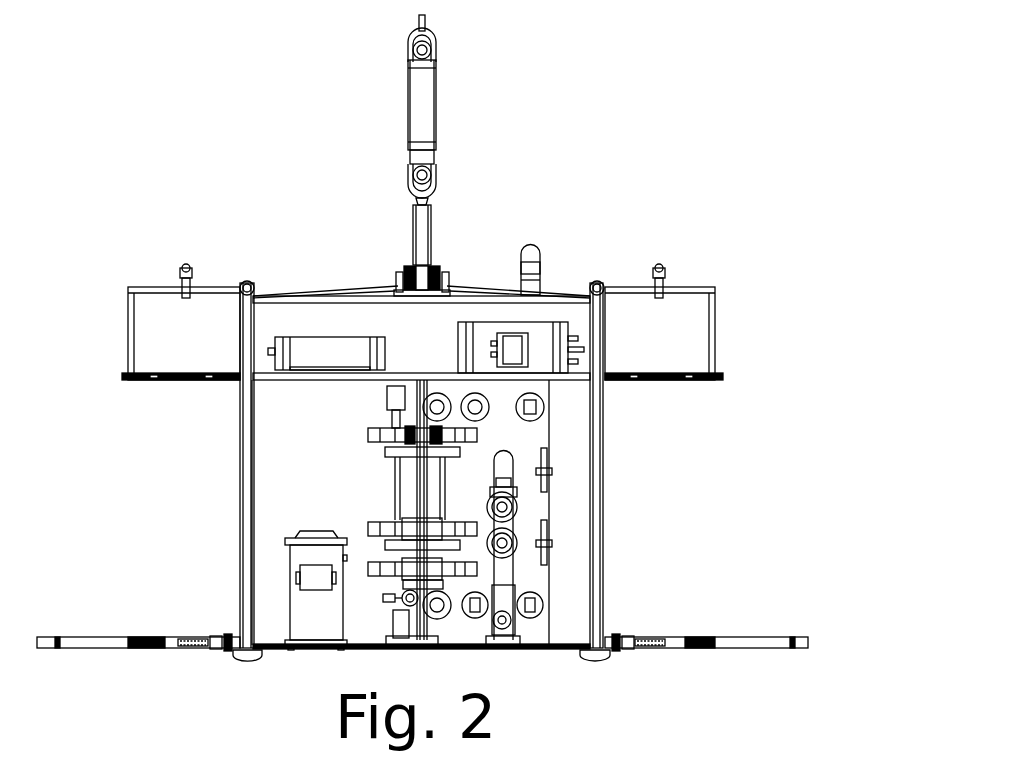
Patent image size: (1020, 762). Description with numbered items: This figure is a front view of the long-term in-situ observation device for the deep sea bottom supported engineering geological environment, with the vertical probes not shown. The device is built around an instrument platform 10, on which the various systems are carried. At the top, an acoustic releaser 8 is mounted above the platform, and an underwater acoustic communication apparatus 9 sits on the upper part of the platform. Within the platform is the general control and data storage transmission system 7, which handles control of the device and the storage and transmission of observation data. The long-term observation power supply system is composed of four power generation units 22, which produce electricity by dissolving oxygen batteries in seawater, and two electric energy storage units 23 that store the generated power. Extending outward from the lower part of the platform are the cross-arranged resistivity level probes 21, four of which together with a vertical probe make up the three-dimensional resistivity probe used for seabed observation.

The general control and data storage transmission system 7 is at (500, 325).
The acoustic releaser 8 is at (405, 103).
The underwater acoustic communication apparatus 9 is at (545, 244).
The instrument platform 10 is at (240, 490).
The resistivity level probe 21 is at (737, 640).
The power generation unit 22 is at (718, 323).
The electric energy storage unit 23 is at (343, 323).